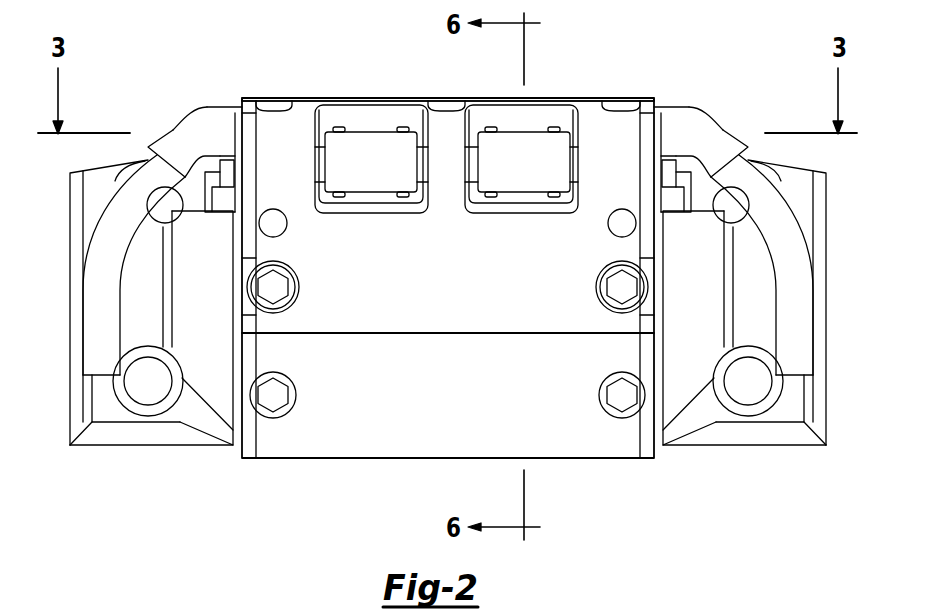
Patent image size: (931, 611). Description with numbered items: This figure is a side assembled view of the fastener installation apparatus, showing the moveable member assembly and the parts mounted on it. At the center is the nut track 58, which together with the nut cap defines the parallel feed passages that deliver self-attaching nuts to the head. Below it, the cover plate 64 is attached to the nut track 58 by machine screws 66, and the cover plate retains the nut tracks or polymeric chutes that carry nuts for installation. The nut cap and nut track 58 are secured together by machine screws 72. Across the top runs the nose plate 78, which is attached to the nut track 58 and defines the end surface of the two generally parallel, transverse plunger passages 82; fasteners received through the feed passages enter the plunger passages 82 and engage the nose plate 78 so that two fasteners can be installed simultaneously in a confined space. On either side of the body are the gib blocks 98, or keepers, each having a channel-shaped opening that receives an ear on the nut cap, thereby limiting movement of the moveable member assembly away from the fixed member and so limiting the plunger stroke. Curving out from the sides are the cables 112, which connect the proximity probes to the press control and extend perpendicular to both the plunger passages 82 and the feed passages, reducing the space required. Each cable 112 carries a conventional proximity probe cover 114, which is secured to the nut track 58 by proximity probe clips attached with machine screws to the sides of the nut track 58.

The nut track 58 is at (452, 293).
The cover plate 64 is at (450, 415).
The machine screws 66 is at (283, 397).
The machine screws 72 is at (273, 287).
The nose plate 78 is at (585, 98).
The plunger passages 82 is at (377, 160).
The gib blocks 98 is at (164, 429).
The cables 112 is at (103, 283).
The proximity probe cover 114 is at (192, 131).